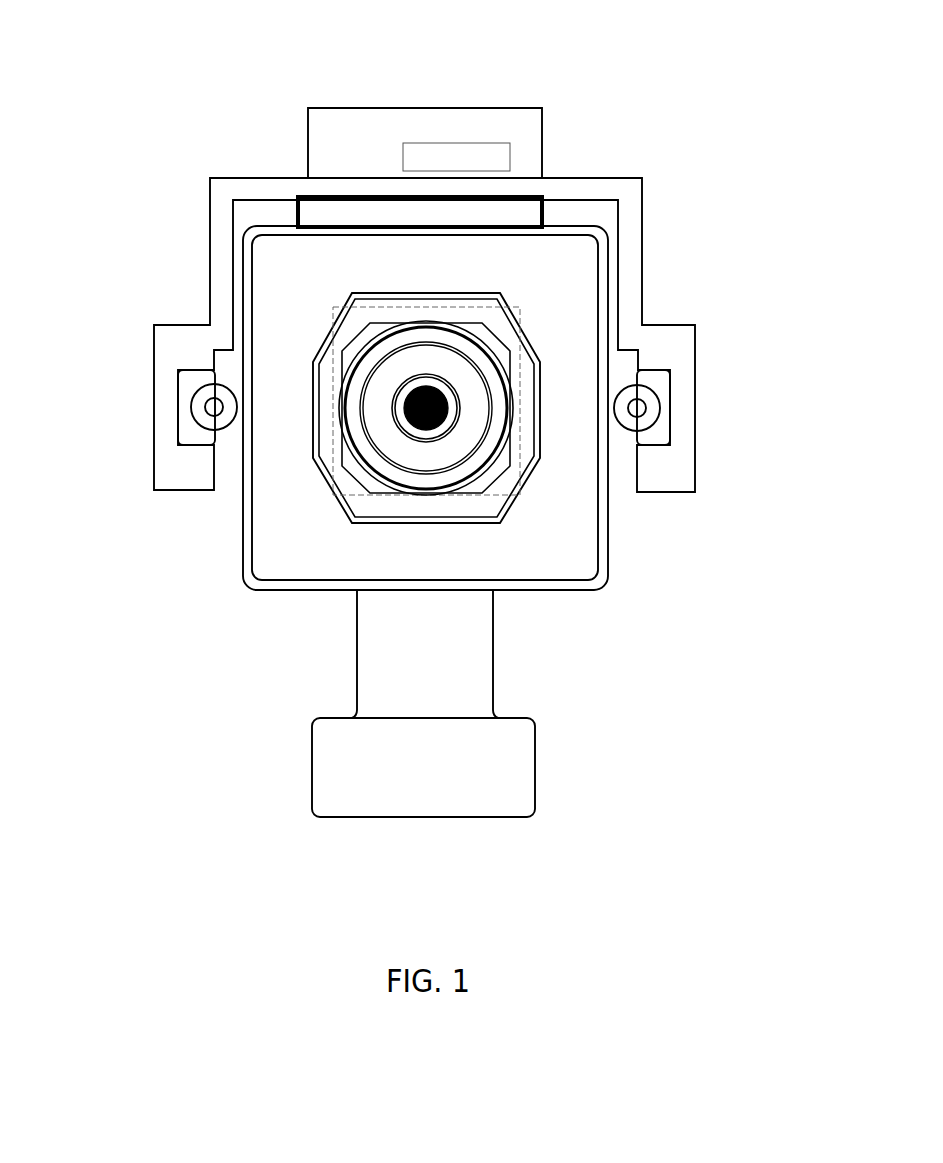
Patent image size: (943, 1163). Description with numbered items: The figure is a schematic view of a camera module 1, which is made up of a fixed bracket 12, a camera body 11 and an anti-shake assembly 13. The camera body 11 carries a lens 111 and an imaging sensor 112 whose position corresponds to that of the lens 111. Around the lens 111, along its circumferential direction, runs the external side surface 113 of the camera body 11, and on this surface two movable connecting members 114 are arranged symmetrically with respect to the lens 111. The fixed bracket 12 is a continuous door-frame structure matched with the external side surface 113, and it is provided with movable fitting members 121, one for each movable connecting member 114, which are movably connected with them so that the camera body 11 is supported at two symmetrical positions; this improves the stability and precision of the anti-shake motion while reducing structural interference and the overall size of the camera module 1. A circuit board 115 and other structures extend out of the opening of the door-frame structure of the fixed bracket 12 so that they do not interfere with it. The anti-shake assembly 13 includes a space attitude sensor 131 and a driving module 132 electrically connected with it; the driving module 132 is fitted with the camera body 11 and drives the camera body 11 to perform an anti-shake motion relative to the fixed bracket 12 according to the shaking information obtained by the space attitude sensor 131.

The camera module 1 is at (205, 90).
The camera body 11 is at (292, 545).
The lens 111 is at (398, 430).
The imaging sensor 112 is at (384, 497).
The external side surface 113 is at (605, 335).
The movable connecting member 114 is at (204, 420).
The circuit board 115 is at (483, 760).
The fixed bracket 12 is at (222, 228).
The movable fitting member 121 is at (198, 392).
The anti-shake assembly 13 is at (590, 37).
The space attitude sensor 131 is at (469, 165).
The driving module 132 is at (352, 212).